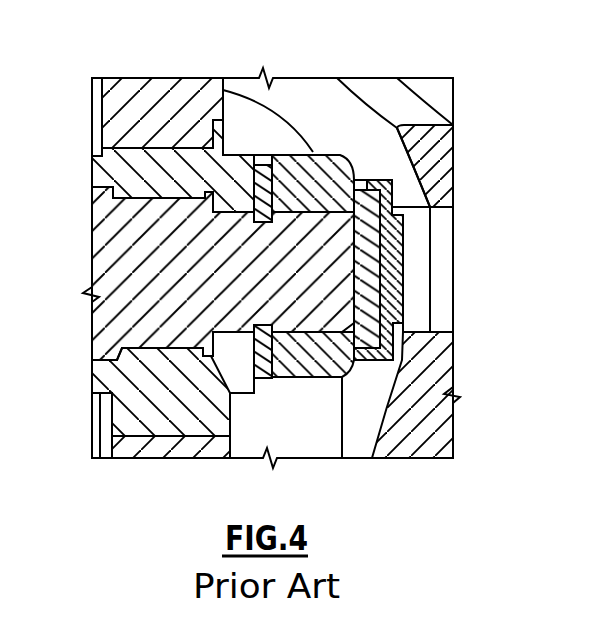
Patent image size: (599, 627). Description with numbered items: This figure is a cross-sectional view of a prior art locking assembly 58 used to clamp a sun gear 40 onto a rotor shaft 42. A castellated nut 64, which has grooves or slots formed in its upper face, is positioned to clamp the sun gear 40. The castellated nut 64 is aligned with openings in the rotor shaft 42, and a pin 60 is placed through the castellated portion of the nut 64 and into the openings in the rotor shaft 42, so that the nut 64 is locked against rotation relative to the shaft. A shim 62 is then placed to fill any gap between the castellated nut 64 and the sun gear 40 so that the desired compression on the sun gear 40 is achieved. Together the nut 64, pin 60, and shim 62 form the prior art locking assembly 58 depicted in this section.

The sun gear 40 is at (103, 168).
The rotor shaft 42 is at (95, 247).
The prior art locking assembly 58 is at (500, 122).
The pin 60 is at (367, 208).
The shim 62 is at (273, 378).
The castellated nut 64 is at (320, 185).